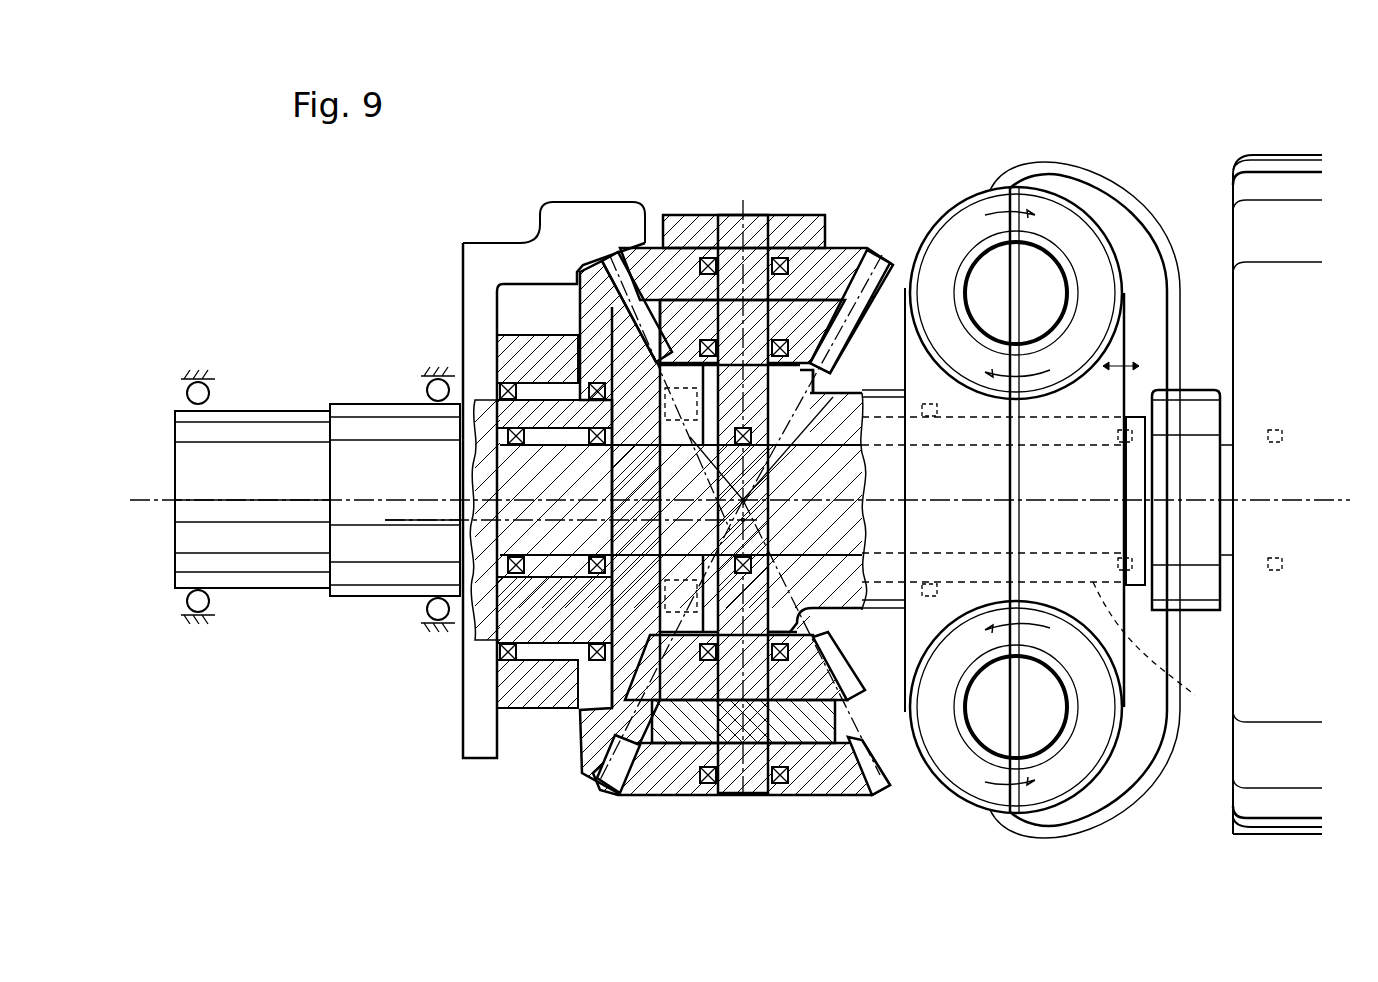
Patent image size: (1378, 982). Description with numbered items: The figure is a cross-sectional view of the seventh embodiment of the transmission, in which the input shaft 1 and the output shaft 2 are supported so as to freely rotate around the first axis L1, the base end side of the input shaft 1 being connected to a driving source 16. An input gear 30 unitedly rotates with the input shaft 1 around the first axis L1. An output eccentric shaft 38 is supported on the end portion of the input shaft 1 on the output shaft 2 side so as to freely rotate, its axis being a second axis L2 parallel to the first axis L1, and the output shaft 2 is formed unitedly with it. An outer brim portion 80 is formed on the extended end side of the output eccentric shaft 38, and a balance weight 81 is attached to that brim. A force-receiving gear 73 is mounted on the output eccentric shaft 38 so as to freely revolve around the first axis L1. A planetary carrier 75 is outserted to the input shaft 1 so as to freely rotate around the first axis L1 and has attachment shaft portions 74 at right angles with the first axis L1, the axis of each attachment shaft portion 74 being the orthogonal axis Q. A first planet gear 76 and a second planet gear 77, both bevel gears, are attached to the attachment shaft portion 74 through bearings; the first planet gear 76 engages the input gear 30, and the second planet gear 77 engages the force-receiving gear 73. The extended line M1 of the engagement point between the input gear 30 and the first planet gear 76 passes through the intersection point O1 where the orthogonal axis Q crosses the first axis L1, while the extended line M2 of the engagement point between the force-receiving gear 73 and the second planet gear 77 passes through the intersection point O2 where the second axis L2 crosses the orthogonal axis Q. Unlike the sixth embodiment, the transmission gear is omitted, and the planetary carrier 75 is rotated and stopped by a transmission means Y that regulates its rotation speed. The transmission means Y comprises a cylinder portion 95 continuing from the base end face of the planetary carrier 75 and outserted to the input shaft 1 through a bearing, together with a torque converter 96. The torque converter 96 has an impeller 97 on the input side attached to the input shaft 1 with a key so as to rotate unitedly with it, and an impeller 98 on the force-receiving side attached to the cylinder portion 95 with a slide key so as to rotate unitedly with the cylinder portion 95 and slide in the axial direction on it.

The input shaft 1 is at (847, 405).
The output shaft 2 is at (262, 408).
The driving source 16 is at (1230, 782).
The input gear 30 is at (592, 728).
The output eccentric shaft 38 is at (540, 712).
The force-receiving gear 73 is at (600, 258).
The attachment shaft portion 74 is at (748, 240).
The planetary carrier 75 is at (848, 615).
The first planet gear 76 is at (693, 295).
The second planet gear 77 is at (648, 262).
The outer brim portion 80 is at (460, 275).
The balance weight 81 is at (616, 218).
The cylinder portion 95 is at (1187, 554).
The torque converter 96 is at (987, 165).
The impeller on the input side 97 is at (938, 222).
The impeller on the force-receiving side 98 is at (1117, 242).
The orthogonal axis Q is at (770, 235).
The transmission means Y is at (1123, 163).
The first axis L1 is at (256, 520).
The second axis L2 is at (428, 535).
The extended line of engagement point M1 is at (790, 464).
The extended line of engagement point M2 is at (760, 488).
The intersection point O1 is at (748, 502).
The intersection point O2 is at (748, 522).